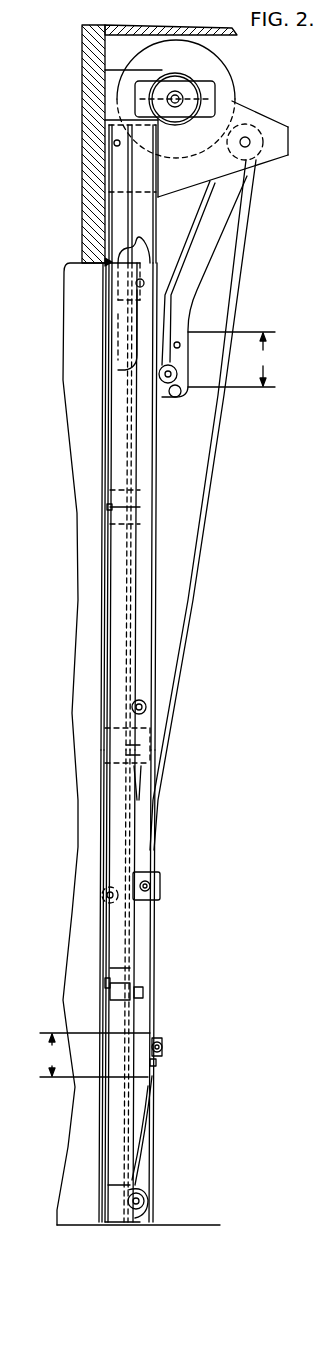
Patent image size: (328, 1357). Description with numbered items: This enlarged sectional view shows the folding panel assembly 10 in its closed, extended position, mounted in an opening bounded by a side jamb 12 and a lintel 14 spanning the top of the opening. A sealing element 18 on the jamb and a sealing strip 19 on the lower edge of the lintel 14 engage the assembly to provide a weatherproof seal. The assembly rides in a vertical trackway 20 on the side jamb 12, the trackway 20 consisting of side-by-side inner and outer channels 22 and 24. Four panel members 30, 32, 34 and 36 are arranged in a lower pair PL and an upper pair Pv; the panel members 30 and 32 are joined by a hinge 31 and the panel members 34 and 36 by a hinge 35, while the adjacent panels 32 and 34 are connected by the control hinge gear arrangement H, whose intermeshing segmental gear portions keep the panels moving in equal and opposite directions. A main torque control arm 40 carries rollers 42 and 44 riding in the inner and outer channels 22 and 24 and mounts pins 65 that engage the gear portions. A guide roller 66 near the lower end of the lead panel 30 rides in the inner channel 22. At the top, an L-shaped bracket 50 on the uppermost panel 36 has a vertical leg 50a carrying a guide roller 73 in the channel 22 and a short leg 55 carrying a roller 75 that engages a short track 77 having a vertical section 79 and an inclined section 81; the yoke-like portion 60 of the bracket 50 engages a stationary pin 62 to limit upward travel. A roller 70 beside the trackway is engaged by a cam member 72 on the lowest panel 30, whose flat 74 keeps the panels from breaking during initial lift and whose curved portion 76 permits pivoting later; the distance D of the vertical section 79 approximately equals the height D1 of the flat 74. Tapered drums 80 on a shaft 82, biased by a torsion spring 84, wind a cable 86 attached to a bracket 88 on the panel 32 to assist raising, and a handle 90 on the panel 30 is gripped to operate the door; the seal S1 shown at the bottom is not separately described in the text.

The folding panel assembly 10 is at (150, 500).
The side jamb 12 is at (72, 277).
The lintel 14 is at (82, 66).
The sealing element 18 is at (108, 306).
The sealing strip 19 is at (108, 258).
The trackway 20 is at (153, 938).
The inner channel 22 is at (148, 553).
The outer channel 24 is at (105, 168).
The panel member 30 is at (130, 1032).
The hinge 31 is at (106, 984).
The panel member 32 is at (133, 848).
The panel member 34 is at (134, 600).
The hinge 35 is at (108, 509).
The panel member 36 is at (133, 458).
The main torque control arm 40 is at (140, 773).
The roller 42 is at (138, 700).
The roller 44 is at (102, 895).
The L-shaped bracket 50 is at (135, 303).
The vertical leg 50a is at (108, 314).
The short leg 55 is at (180, 391).
The yoke-like portion 60 is at (136, 243).
The stationary pin 62 is at (114, 143).
The pin 65 is at (150, 728).
The guide roller 66 is at (141, 1191).
The roller 70 is at (163, 1046).
The cam member 72 is at (140, 1090).
The guide roller 73 is at (143, 280).
The flat 74 is at (156, 1063).
The roller 75 is at (173, 365).
The curved portion 76 is at (141, 1116).
The short track 77 is at (232, 232).
The vertical section 79 is at (179, 343).
The tapered drum 80 is at (221, 78).
The inclined section 81 is at (210, 253).
The shaft 82 is at (175, 93).
The torsion spring 84 is at (190, 119).
The cable 86 is at (207, 507).
The bracket 88 is at (160, 886).
The handle 90 is at (144, 994).
The distance D is at (231, 359).
The height D1 is at (95, 1055).
The control hinge gear arrangement H is at (140, 748).
The upper pair Pv is at (123, 507).
The lower pair PL is at (130, 988).
The switch S1 is at (135, 1222).